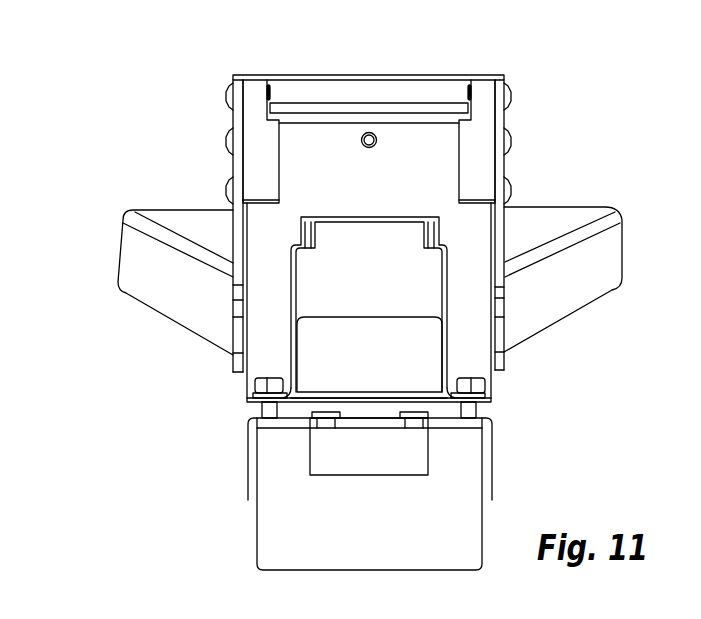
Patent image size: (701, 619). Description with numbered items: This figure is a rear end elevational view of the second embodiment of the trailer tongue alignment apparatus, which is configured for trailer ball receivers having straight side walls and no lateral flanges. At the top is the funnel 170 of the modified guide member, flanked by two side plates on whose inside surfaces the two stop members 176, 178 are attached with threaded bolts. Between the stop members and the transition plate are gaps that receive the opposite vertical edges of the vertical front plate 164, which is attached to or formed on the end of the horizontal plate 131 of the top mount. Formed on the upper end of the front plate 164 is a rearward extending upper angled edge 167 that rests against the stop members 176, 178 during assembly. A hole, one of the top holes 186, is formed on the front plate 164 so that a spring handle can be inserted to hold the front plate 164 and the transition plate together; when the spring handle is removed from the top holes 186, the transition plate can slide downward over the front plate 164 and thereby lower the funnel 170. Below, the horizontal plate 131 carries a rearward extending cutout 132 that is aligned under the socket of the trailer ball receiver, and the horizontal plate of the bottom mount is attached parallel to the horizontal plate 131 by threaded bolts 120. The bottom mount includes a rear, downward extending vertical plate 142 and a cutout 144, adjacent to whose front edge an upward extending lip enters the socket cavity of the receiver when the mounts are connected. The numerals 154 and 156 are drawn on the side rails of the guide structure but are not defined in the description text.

The funnel 170 is at (108, 242).
The stop member 178 is at (247, 117).
The stop member 176 is at (488, 97).
The upper angled edge 167 is at (337, 107).
The left side rail 156 is at (232, 163).
The right side rail 154 is at (505, 165).
The top holes 186 is at (370, 148).
The vertical front plate 164 is at (272, 247).
The horizontal plate 131 is at (327, 392).
The rearward extending cutout 132 is at (397, 400).
The threaded bolts 120 is at (255, 388).
The cutout 144 is at (360, 414).
The vertical plate 142 is at (272, 513).